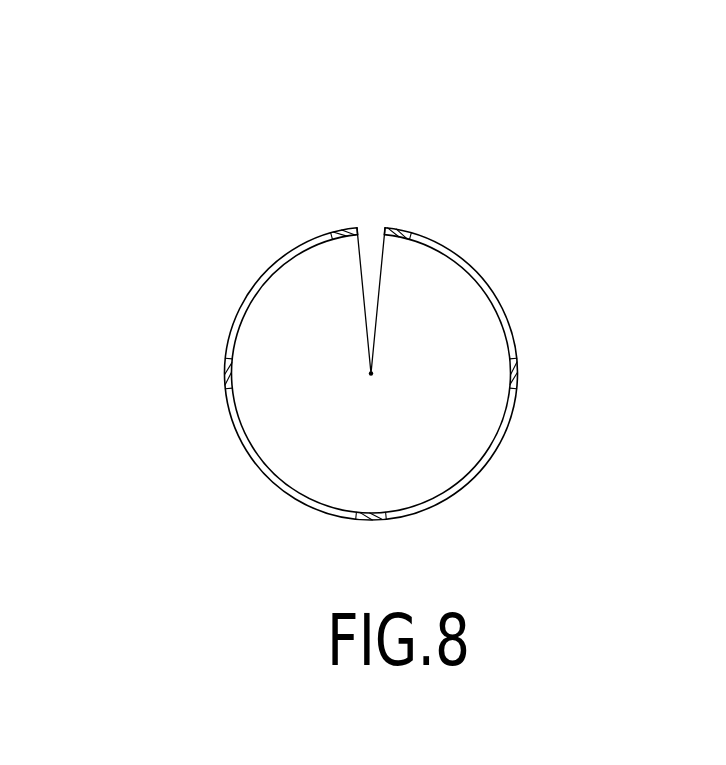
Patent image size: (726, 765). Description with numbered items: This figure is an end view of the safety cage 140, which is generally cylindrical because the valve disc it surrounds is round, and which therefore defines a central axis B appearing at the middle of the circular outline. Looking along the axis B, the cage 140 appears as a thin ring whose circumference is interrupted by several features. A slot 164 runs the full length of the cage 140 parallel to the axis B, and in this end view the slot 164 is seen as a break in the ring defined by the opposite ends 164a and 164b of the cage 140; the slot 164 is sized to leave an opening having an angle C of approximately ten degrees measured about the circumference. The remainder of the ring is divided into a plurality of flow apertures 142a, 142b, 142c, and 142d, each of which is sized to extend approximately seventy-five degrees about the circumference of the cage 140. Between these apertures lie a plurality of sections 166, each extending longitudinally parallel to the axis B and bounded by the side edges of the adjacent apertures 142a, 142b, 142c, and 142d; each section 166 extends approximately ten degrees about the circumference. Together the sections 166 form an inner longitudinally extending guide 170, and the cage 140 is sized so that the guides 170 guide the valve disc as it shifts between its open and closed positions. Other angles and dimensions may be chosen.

The cage 140 is at (282, 492).
The flow aperture 142a is at (305, 242).
The flow aperture 142b is at (255, 460).
The flow aperture 142c is at (455, 492).
The flow aperture 142d is at (502, 293).
The slot 164 is at (372, 226).
The opposite end of the cage 164a is at (362, 222).
The opposite end of the cage 164b is at (387, 215).
The section 166 is at (345, 226).
The inner longitudinally extending guide 170 is at (349, 233).
The axis B is at (375, 372).
The angle C is at (372, 275).